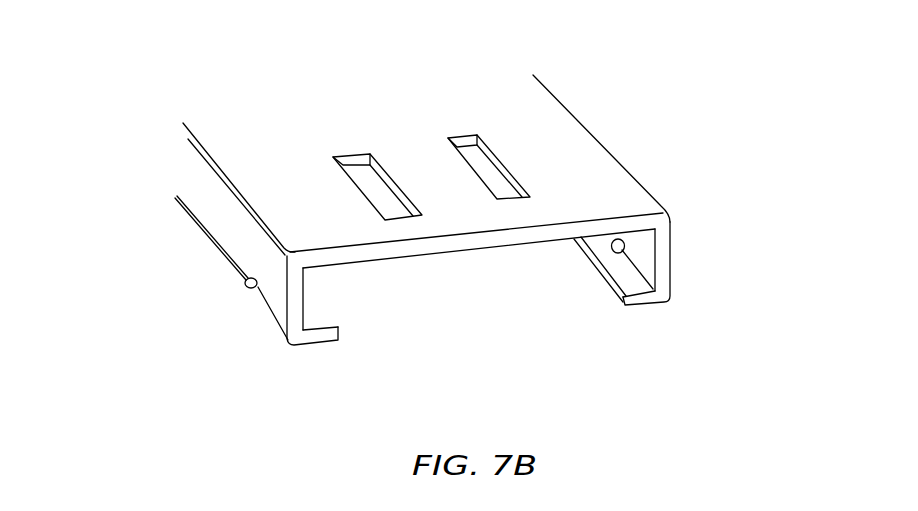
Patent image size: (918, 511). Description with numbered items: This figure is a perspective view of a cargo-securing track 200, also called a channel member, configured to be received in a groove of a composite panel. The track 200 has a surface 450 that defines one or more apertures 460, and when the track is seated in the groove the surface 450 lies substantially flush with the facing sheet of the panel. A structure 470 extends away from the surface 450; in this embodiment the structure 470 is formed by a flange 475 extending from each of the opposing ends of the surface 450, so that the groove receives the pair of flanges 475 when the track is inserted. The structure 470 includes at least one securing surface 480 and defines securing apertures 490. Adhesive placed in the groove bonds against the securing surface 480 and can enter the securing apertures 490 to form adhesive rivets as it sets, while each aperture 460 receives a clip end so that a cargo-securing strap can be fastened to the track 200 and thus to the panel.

The cargo-securing track 200 is at (677, 147).
The surface 450 is at (452, 207).
The apertures 460 is at (373, 188).
The structure 470 is at (329, 293).
The flange 475 is at (297, 310).
The securing surface 480 is at (321, 352).
The securing apertures 490 is at (245, 282).